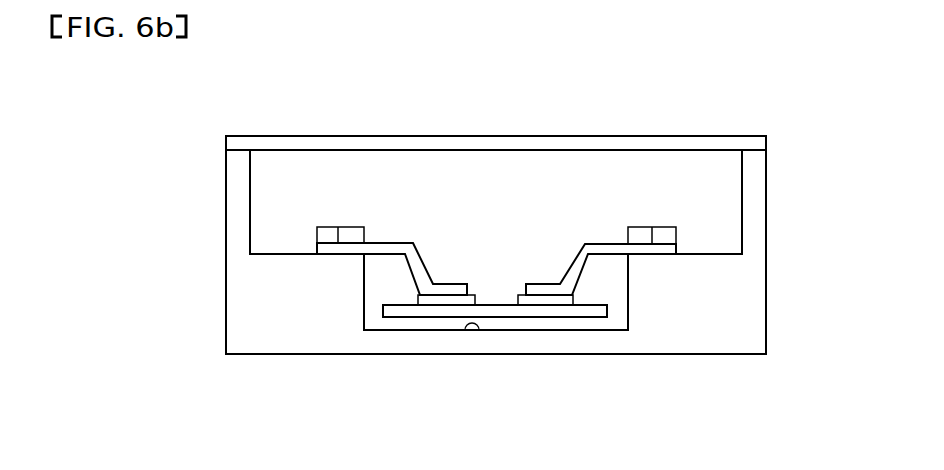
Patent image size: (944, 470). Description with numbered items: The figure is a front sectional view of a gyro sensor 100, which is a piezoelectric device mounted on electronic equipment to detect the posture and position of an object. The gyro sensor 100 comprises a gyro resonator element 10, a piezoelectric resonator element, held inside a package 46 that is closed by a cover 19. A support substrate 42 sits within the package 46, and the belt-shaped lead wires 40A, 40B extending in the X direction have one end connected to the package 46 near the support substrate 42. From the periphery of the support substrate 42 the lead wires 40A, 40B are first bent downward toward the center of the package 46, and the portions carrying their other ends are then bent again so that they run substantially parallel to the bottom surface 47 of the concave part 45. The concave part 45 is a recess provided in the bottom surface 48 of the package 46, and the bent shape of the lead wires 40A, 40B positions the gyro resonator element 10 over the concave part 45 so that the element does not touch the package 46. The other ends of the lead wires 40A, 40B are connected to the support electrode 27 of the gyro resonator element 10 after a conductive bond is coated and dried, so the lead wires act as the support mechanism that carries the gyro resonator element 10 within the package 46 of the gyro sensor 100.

The gyro resonator element 10 is at (562, 314).
The cover 19 is at (753, 144).
The support electrode 27 is at (469, 298).
The lead wire 40A is at (388, 250).
The lead wire 40B is at (603, 248).
The support substrate 42 is at (640, 236).
The concave part 45 is at (387, 278).
The package 46 is at (257, 317).
The bottom surface of the concave part 47 is at (466, 330).
The bottom surface 48 is at (283, 253).
The gyro sensor 100 is at (679, 357).